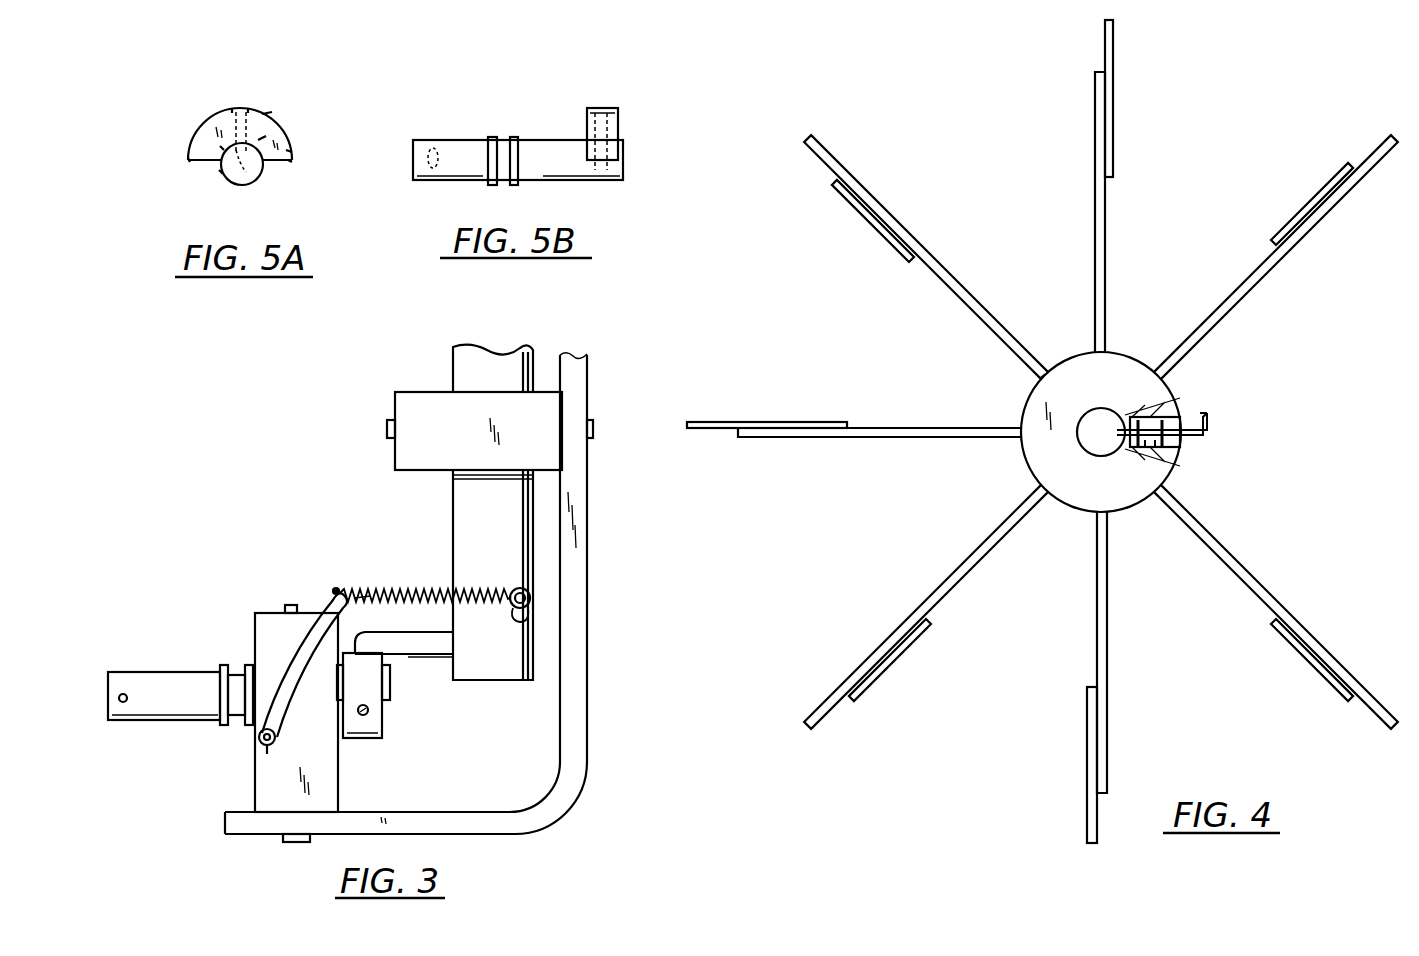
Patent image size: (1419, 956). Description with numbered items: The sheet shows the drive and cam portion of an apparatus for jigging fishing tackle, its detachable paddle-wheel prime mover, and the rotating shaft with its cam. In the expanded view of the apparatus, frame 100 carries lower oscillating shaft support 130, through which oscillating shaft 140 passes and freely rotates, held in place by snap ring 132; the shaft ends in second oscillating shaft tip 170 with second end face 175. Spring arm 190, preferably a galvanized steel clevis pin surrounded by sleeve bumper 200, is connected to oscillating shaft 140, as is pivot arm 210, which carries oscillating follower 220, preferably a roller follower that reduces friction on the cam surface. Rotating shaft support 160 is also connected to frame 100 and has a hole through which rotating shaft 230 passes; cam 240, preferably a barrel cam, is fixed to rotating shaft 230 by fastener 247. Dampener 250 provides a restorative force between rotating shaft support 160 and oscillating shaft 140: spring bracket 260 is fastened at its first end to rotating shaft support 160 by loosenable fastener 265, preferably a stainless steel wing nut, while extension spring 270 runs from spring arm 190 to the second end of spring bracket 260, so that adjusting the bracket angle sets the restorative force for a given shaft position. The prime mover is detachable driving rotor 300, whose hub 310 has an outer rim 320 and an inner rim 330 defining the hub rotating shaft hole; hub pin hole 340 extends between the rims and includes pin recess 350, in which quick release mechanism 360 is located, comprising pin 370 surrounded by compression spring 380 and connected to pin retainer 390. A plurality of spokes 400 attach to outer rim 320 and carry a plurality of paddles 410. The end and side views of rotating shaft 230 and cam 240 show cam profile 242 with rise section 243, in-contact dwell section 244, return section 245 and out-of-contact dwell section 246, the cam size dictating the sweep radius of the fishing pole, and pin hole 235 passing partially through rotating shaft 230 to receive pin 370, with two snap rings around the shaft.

In FIG. 3, the frame 100 is at (588, 502).
In FIG. 3, the lower oscillating shaft support 130 is at (395, 450).
In FIG. 3, the snap ring 132 is at (450, 478).
In FIG. 3, the oscillating shaft 140 is at (453, 357).
In FIG. 3, the rotating shaft support 160 is at (255, 786).
In FIG. 3, the second oscillating shaft tip 170 is at (523, 528).
In FIG. 3, the second end face 175 is at (513, 683).
In FIG. 3, the spring arm 190 is at (532, 590).
In FIG. 3, the sleeve bumper 200 is at (520, 622).
In FIG. 3, the pivot arm 210 is at (400, 660).
In FIG. 3, the oscillating follower 220 is at (415, 660).
In FIG. 5A, the rotating shaft 230 is at (243, 184).
In FIG. 5B, the rotating shaft 230 is at (538, 143).
In FIG. 3, the rotating shaft 230 is at (177, 670).
In FIG. 5A, the pin hole 235 is at (222, 148).
In FIG. 5B, the pin hole 235 is at (440, 148).
In FIG. 3, the pin hole 235 is at (123, 694).
In FIG. 5A, the cam 240 is at (214, 122).
In FIG. 5B, the cam 240 is at (618, 112).
In FIG. 3, the cam 240 is at (365, 740).
In FIG. 5A, the cam profile 242 is at (293, 151).
In FIG. 5A, the rise section 243 is at (190, 159).
In FIG. 5A, the in-contact dwell section 244 is at (276, 112).
In FIG. 5A, the return section 245 is at (293, 161).
In FIG. 5A, the out-of-contact dwell section 246 is at (220, 173).
In FIG. 5A, the fastener 247 is at (264, 136).
In FIG. 5B, the fastener 247 is at (610, 132).
In FIG. 3, the dampener 250 is at (363, 590).
In FIG. 3, the spring bracket 260 is at (318, 597).
In FIG. 3, the loosenable fastener 265 is at (258, 740).
In FIG. 3, the spring 270 is at (408, 590).
In FIG. 4, the detachable driving rotor 300 is at (1263, 82).
In FIG. 4, the hub 310 is at (1055, 351).
In FIG. 4, the outer rim 320 is at (1040, 378).
In FIG. 4, the inner rim 330 is at (1078, 437).
In FIG. 4, the hub pin hole 340 is at (1185, 440).
In FIG. 4, the pin recess 350 is at (1167, 390).
In FIG. 4, the quick release mechanism 360 is at (1146, 458).
In FIG. 4, the pin 370 is at (1208, 422).
In FIG. 4, the spring 380 is at (1187, 452).
In FIG. 4, the pin retainer 390 is at (1138, 395).
In FIG. 4, the spokes 400 is at (1095, 240).
In FIG. 4, the paddles 410 is at (1115, 57).